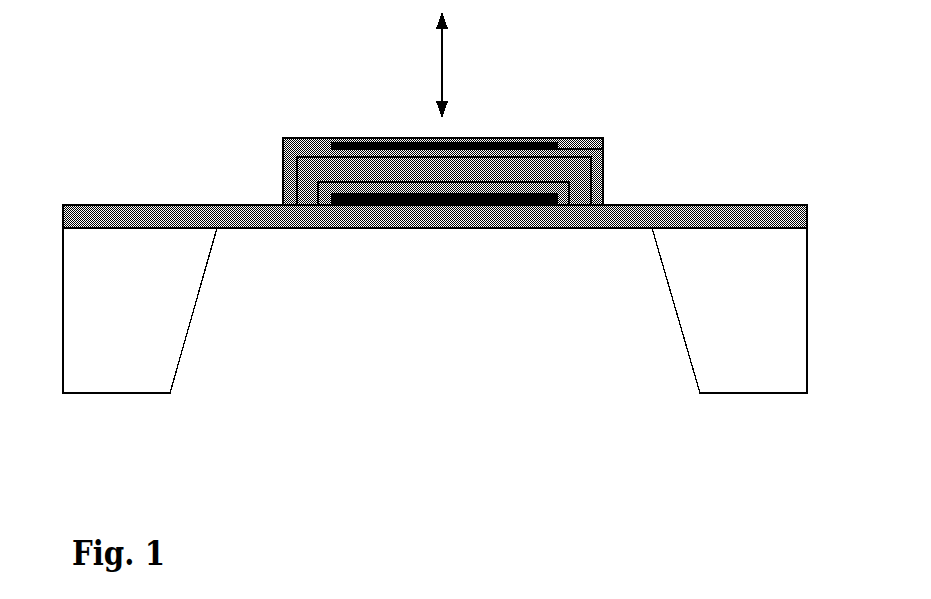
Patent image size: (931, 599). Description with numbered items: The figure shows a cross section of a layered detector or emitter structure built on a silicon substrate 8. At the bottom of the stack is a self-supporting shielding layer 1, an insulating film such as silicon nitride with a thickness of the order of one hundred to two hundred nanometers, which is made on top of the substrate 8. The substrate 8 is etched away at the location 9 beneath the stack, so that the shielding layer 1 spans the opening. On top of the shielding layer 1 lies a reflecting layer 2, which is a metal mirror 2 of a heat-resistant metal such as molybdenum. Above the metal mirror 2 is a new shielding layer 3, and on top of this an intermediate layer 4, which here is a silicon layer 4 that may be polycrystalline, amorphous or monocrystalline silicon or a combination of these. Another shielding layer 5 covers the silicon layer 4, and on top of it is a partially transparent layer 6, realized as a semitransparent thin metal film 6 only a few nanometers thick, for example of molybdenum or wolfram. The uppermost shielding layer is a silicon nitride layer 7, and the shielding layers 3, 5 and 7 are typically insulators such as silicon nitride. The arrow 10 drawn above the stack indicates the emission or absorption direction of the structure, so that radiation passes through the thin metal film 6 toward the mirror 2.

The shielding layer 1 is at (207, 203).
The reflecting layer 2 is at (338, 206).
The shielding layer 3 is at (558, 201).
The intermediate layer 4 is at (568, 169).
The shielding layer 5 is at (308, 150).
The partially transparent layer 6 is at (362, 150).
The silicon nitride layer 7 is at (563, 140).
The silicon substrate 8 is at (127, 313).
The location 9 is at (435, 310).
The arrow 10 is at (426, 65).